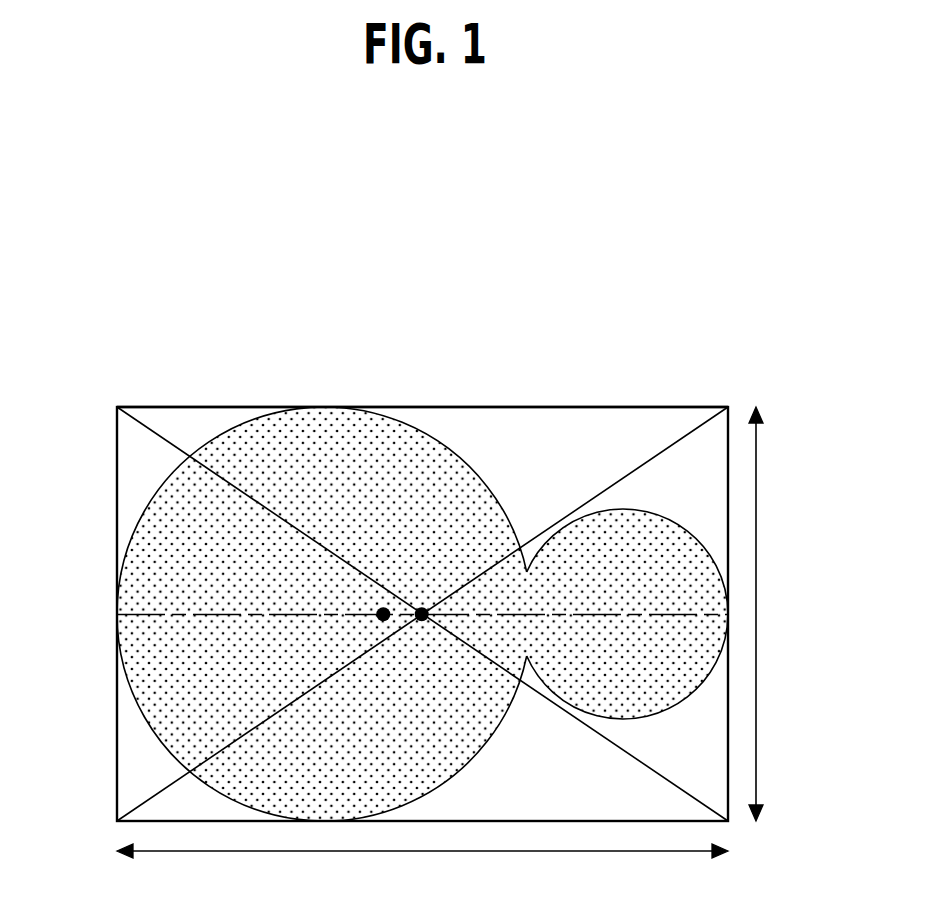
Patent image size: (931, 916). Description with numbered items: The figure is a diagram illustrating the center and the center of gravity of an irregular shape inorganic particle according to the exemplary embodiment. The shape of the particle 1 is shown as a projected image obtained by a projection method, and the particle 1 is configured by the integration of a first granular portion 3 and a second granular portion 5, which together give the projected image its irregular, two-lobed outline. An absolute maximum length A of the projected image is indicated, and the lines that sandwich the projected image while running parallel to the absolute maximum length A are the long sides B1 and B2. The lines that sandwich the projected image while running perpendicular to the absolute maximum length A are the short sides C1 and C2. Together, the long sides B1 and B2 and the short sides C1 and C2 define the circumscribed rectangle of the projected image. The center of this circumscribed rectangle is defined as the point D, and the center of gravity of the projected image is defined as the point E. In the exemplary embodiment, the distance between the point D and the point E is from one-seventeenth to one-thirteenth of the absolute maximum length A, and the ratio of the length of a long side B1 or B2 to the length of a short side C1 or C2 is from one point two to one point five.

The particle 1 is at (305, 283).
The first granular portion 3 is at (195, 689).
The second granular portion 5 is at (652, 673).
The absolute maximum length A is at (613, 613).
The long side B1 is at (422, 381).
The long side B2 is at (422, 869).
The short side C1 is at (775, 614).
The short side C2 is at (390, 616).
The center of the circumscribed rectangle D is at (424, 620).
The center of gravity of the projected image E is at (381, 609).